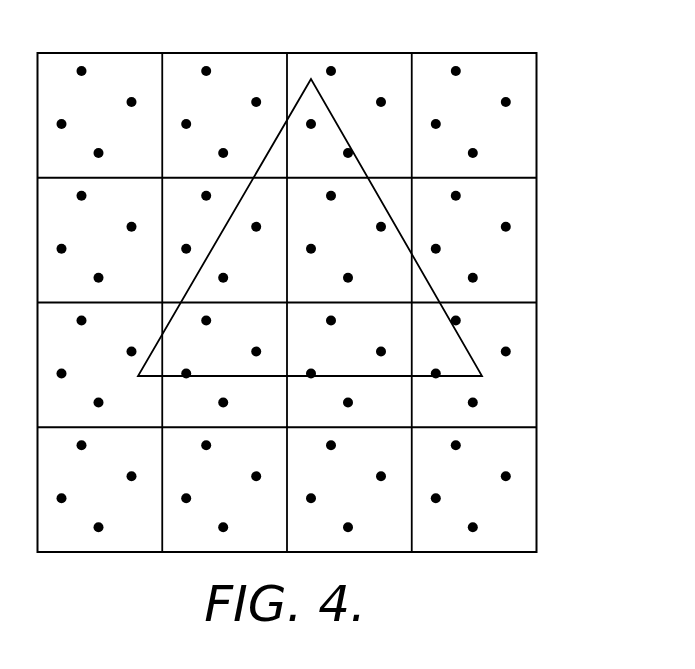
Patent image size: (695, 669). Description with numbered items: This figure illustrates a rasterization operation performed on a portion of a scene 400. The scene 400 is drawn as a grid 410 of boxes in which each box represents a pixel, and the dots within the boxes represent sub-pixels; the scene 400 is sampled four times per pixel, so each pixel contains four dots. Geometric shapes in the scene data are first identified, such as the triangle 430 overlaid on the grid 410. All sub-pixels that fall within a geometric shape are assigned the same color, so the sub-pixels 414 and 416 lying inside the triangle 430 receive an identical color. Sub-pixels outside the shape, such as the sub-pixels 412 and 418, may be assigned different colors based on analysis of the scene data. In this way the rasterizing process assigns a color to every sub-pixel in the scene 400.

The scene 400 is at (600, 118).
The grid 410 is at (368, 53).
The sub-pixel 412 is at (331, 66).
The sub-pixel 414 is at (311, 129).
The sub-pixel 416 is at (349, 158).
The sub-pixel 418 is at (381, 97).
The triangle 430 is at (482, 375).